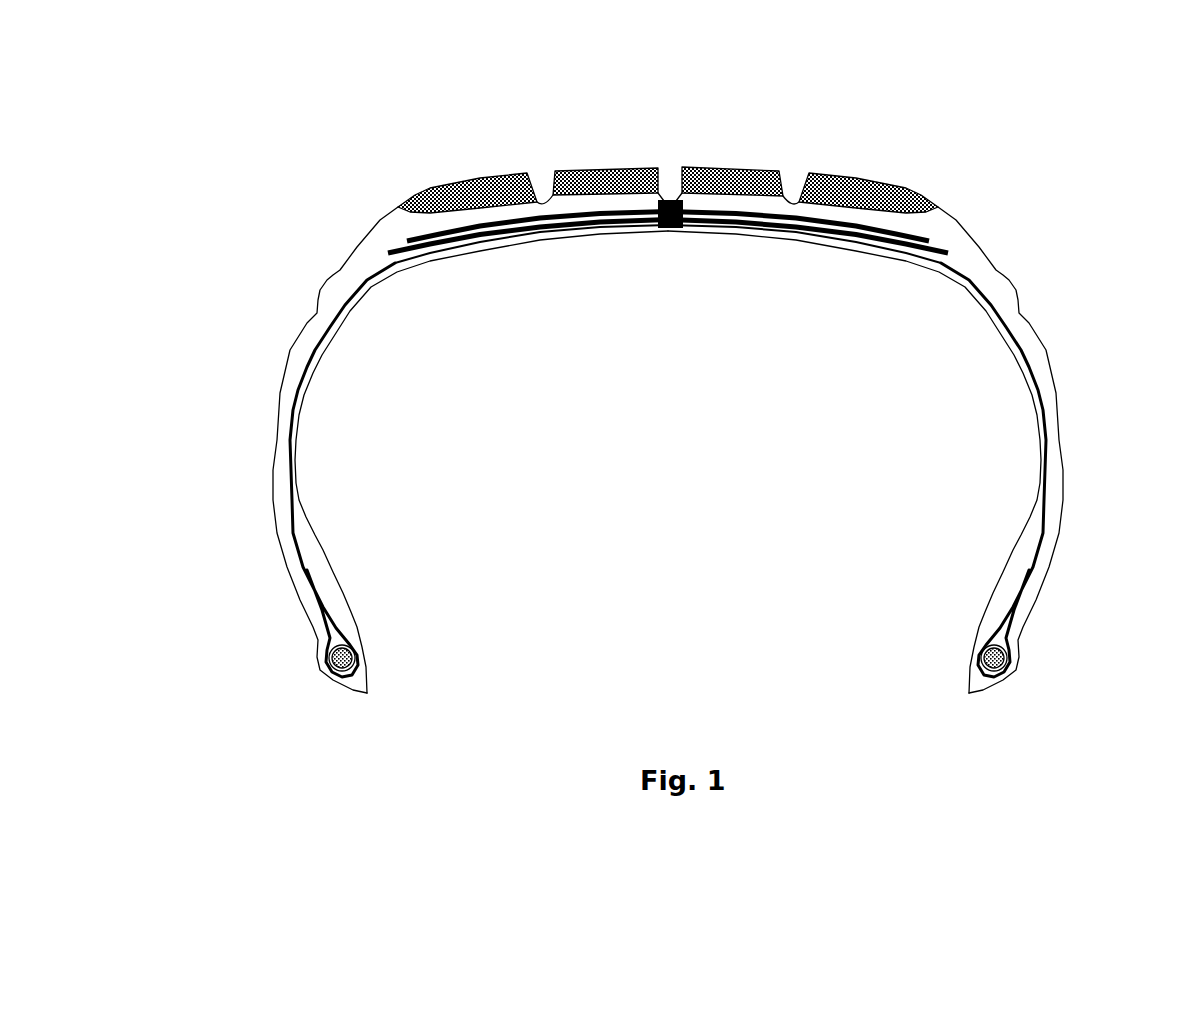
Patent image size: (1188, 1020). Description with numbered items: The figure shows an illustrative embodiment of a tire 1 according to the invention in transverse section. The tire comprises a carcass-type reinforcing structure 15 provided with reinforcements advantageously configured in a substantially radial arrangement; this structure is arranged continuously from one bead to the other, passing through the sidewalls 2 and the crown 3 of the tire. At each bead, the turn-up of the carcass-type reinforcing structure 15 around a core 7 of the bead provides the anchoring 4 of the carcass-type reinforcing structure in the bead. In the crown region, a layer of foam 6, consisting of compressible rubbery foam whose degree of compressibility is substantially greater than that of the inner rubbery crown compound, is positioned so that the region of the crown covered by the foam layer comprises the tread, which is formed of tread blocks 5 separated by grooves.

The tire 1 is at (250, 420).
The sidewalls 2 is at (1025, 352).
The crown 3 is at (427, 240).
The anchoring 4 is at (995, 632).
The tread blocks 5 is at (587, 158).
The layer of foam 6 is at (855, 193).
The core 7 is at (345, 657).
The carcass-type reinforcing structure 15 is at (1037, 392).